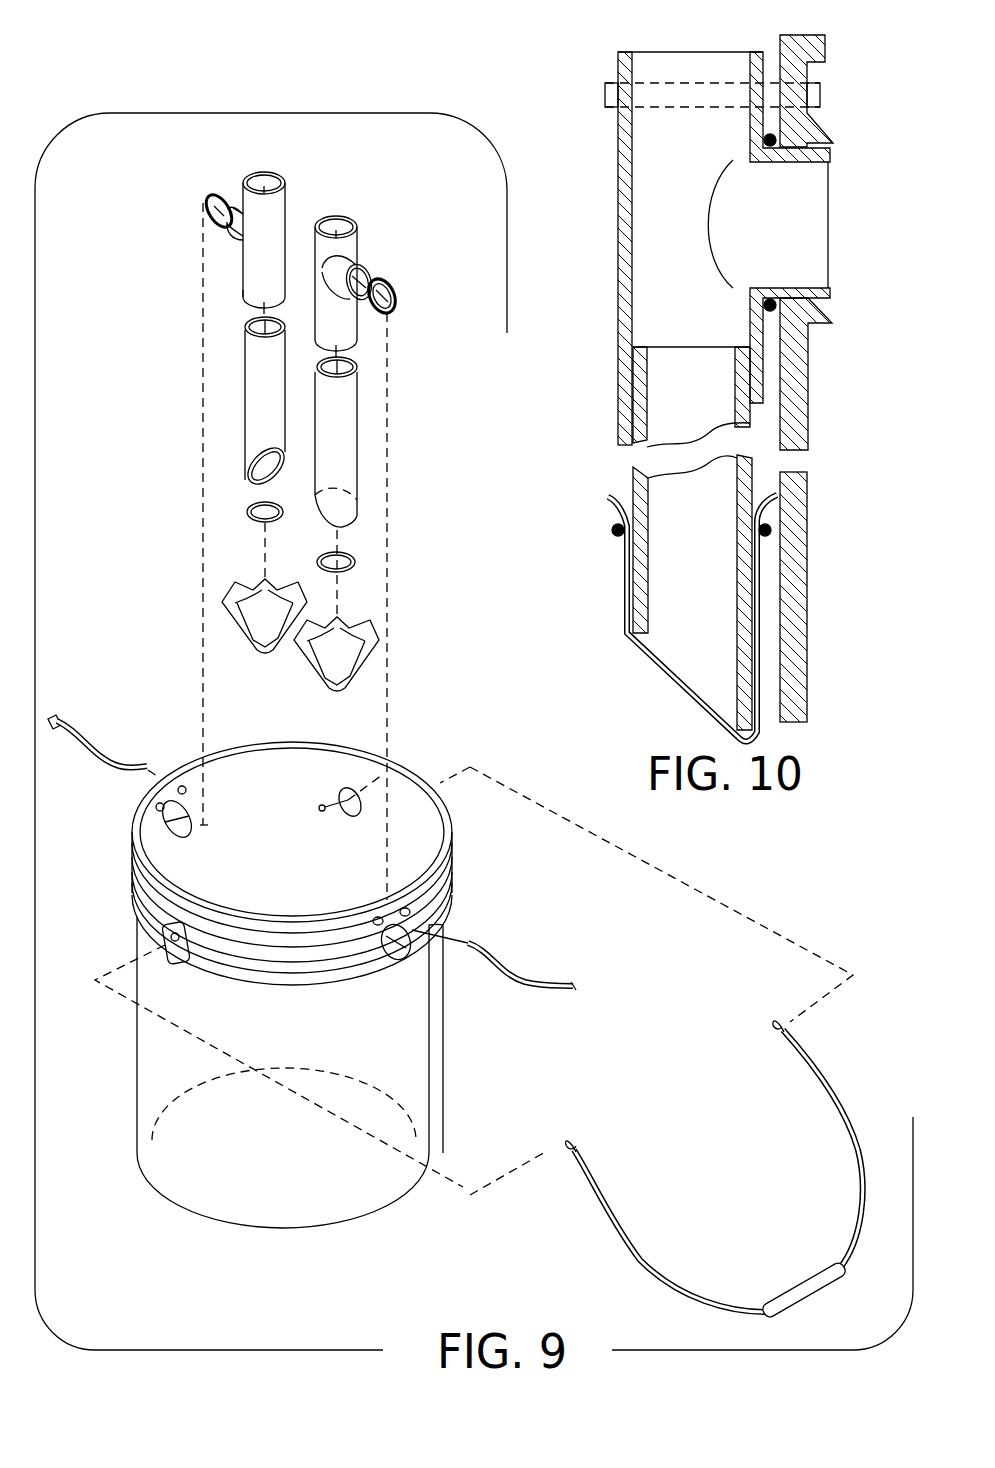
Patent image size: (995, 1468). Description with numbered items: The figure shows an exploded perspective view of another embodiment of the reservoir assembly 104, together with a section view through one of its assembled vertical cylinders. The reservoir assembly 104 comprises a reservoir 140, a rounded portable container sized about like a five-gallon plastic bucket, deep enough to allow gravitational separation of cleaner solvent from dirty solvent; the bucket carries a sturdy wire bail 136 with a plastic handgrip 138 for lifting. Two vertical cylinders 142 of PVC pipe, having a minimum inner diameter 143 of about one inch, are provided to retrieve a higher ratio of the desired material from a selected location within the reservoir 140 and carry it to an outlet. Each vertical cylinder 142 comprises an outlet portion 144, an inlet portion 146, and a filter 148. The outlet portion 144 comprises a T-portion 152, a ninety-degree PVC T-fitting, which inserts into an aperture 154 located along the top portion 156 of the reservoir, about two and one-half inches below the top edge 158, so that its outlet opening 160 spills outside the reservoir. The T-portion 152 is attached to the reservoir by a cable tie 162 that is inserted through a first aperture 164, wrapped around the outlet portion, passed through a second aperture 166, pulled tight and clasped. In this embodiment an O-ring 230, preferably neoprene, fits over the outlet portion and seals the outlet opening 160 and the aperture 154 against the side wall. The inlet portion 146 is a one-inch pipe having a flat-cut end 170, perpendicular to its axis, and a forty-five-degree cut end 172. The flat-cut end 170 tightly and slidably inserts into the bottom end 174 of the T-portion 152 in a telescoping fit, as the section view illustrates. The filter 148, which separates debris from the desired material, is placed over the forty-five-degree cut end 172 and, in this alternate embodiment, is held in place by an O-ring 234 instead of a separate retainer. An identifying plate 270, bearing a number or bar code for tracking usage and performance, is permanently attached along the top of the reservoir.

In FIG. 9, the reservoir assembly 104 is at (300, 1238).
In FIG. 9, the wire bail 136 is at (627, 1252).
In FIG. 9, the plastic handgrip 138 is at (790, 1305).
In FIG. 9, the reservoir 140 is at (173, 1196).
In FIG. 9, the vertical cylinder 142 is at (196, 383).
In FIG. 9, the inner diameter 143 is at (266, 182).
In FIG. 10, the inner diameter 143 is at (620, 52).
In FIG. 9, the outlet portion 144 is at (243, 252).
In FIG. 9, the inlet portion 146 is at (245, 345).
In FIG. 10, the inlet portion 146 is at (633, 425).
In FIG. 9, the filter 148 is at (232, 602).
In FIG. 10, the filter 148 is at (627, 632).
In FIG. 9, the T-portion 152 is at (210, 208).
In FIG. 9, the aperture 154 is at (400, 955).
In FIG. 9, the top portion 156 is at (132, 880).
In FIG. 9, the top edge 158 is at (452, 822).
In FIG. 10, the top edge 158 is at (826, 45).
In FIG. 9, the outlet opening 160 is at (392, 303).
In FIG. 10, the outlet opening 160 is at (785, 204).
In FIG. 9, the cable tie 162 is at (60, 722).
In FIG. 9, the first aperture 164 is at (375, 920).
In FIG. 9, the second aperture 166 is at (402, 910).
In FIG. 9, the flat-cut end 170 is at (252, 327).
In FIG. 9, the forty-five-degree cut end 172 is at (255, 480).
In FIG. 9, the bottom end 174 is at (243, 297).
In FIG. 9, the O-ring 230 is at (226, 193).
In FIG. 10, the O-ring 230 is at (773, 138).
In FIG. 9, the O-ring 234 is at (248, 515).
In FIG. 10, the O-ring 234 is at (617, 537).
In FIG. 9, the identifying plate 270 is at (348, 792).